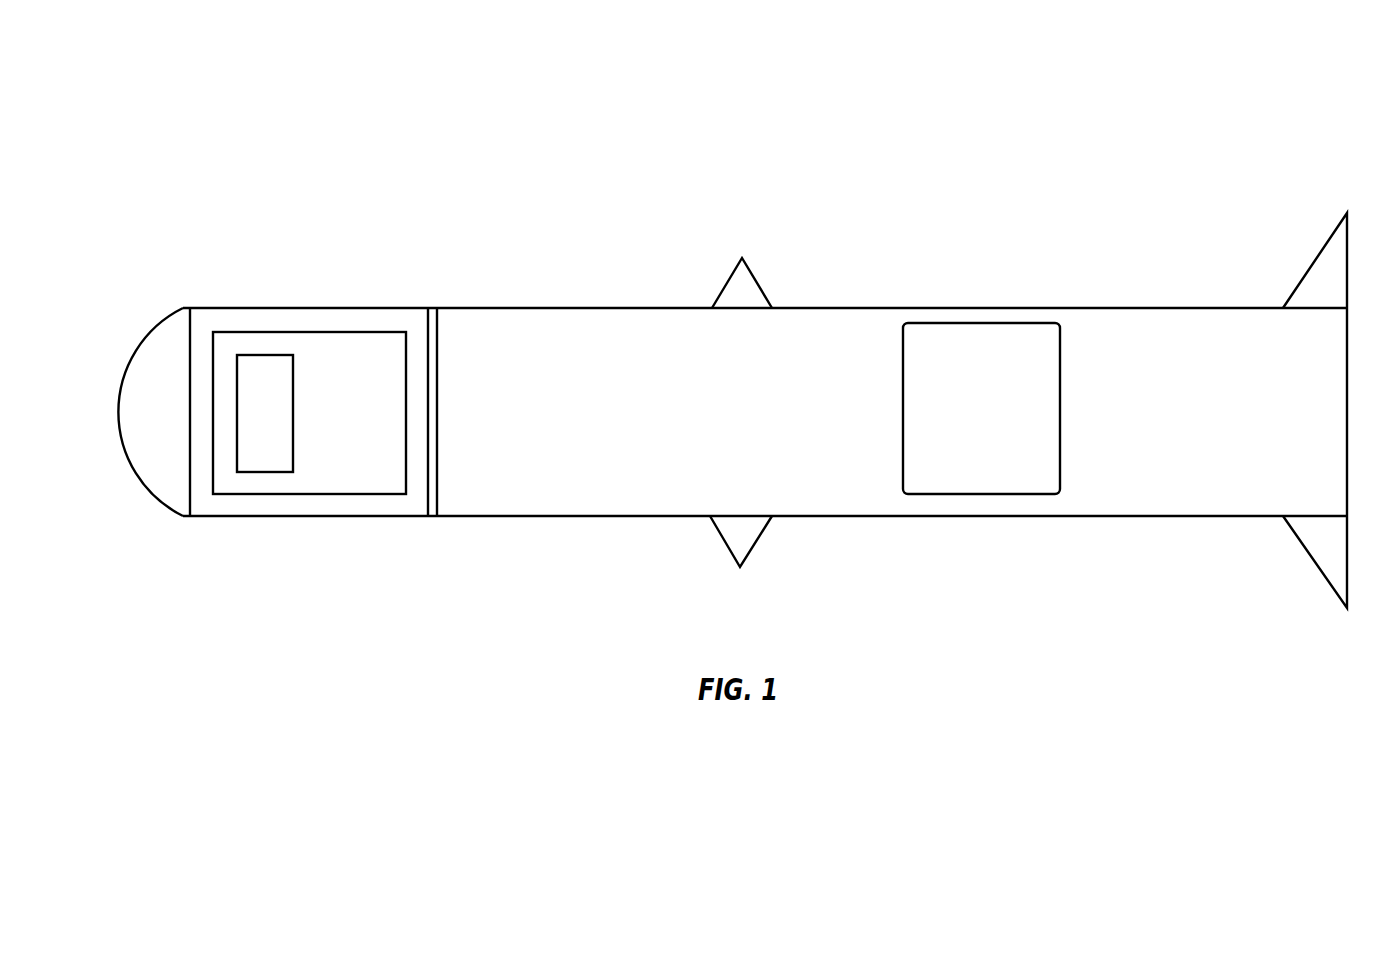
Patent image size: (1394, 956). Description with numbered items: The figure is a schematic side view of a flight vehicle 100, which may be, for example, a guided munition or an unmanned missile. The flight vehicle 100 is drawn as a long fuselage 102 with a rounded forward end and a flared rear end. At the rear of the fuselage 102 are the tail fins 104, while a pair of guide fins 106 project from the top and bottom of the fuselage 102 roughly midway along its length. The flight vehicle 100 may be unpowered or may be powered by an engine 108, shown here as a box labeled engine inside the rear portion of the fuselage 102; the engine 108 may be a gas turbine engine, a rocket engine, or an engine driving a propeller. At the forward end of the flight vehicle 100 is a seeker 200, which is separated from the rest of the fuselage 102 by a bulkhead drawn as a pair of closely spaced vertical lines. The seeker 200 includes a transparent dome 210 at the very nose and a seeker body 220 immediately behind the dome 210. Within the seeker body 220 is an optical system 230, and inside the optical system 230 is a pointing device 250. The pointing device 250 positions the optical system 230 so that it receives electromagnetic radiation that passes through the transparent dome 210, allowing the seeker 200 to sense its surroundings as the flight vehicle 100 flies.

The flight vehicle 100 is at (257, 99).
The fuselage 102 is at (575, 308).
The tail fins 104 is at (1315, 260).
The guide fins 106 is at (742, 258).
The engine 108 is at (980, 323).
The seeker 200 is at (262, 307).
The transparent dome 210 is at (125, 462).
The seeker body 220 is at (312, 517).
The optical system 230 is at (390, 495).
The pointing device 250 is at (246, 450).